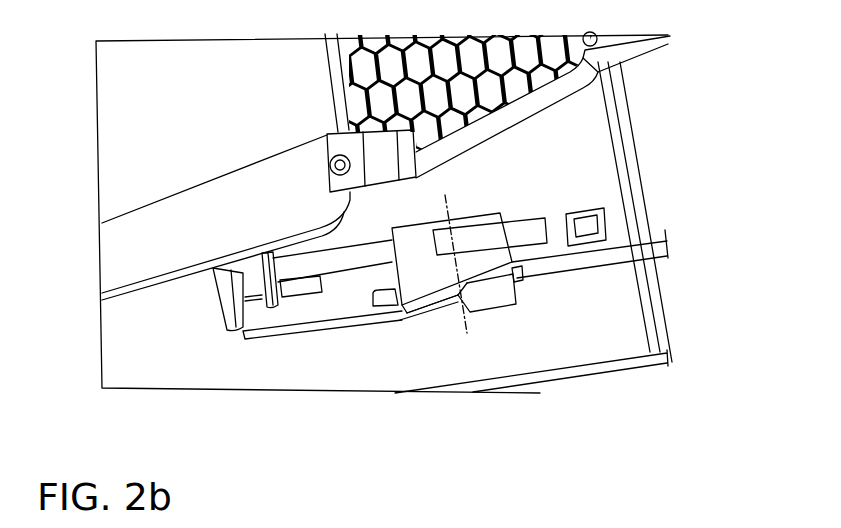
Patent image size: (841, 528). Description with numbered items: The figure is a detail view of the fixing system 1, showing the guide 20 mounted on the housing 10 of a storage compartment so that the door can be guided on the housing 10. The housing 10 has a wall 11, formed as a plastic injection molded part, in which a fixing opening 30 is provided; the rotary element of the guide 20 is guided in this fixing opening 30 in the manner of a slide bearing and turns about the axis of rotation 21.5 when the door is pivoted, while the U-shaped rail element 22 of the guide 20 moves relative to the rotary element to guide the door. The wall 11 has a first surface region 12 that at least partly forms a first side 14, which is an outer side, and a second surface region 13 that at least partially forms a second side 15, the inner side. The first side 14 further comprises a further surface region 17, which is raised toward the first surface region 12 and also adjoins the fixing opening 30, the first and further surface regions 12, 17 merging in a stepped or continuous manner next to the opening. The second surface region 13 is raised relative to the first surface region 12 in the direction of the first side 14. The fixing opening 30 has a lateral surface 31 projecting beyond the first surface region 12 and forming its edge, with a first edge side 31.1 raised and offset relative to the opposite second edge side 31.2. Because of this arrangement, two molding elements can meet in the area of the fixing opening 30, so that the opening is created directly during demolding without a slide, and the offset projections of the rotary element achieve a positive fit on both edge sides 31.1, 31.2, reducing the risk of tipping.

The fixing system 1 is at (656, 91).
The housing 10 is at (680, 210).
The wall 11 is at (609, 253).
The first surface region 12 is at (577, 267).
The second surface region 13 is at (310, 300).
The first side 14 is at (560, 340).
The second side 15 is at (563, 222).
The further surface region 17 is at (323, 330).
The guide 20 is at (290, 213).
The axis of rotation 21.5 is at (445, 205).
The rail element 22 is at (513, 232).
The fixing opening 30 is at (457, 335).
The lateral surface 31 is at (422, 323).
The first edge side 31.1 is at (402, 313).
The second edge side 31.2 is at (510, 268).